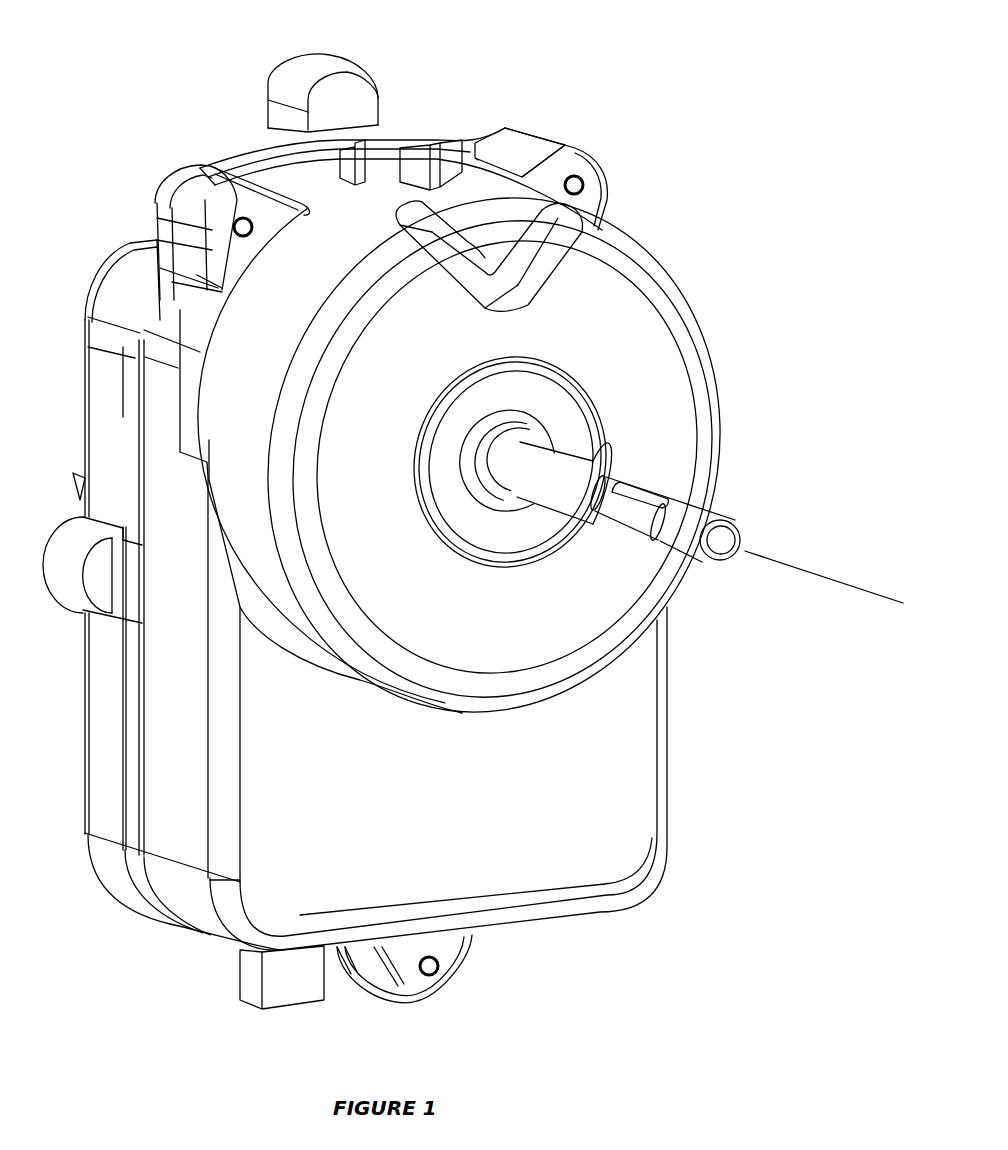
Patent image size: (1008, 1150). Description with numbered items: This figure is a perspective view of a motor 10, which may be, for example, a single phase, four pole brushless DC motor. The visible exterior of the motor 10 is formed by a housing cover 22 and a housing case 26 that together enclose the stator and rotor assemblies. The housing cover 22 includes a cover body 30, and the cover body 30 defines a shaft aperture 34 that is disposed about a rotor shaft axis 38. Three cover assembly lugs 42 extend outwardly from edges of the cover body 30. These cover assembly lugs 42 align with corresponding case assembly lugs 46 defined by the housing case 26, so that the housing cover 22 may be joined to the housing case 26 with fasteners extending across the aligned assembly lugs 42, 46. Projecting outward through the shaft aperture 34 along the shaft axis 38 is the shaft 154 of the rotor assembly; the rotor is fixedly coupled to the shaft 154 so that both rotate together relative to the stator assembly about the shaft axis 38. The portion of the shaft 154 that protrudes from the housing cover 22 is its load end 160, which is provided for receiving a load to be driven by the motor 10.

The motor 10 is at (86, 77).
The housing cover 22 is at (628, 243).
The housing case 26 is at (88, 393).
The cover body 30 is at (217, 400).
The shaft aperture 34 is at (557, 452).
The rotor shaft axis 38 is at (893, 600).
The cover assembly lugs 42 is at (200, 185).
The case assembly lugs 46 is at (170, 178).
The shaft 154 is at (565, 478).
The load end 160 is at (725, 538).